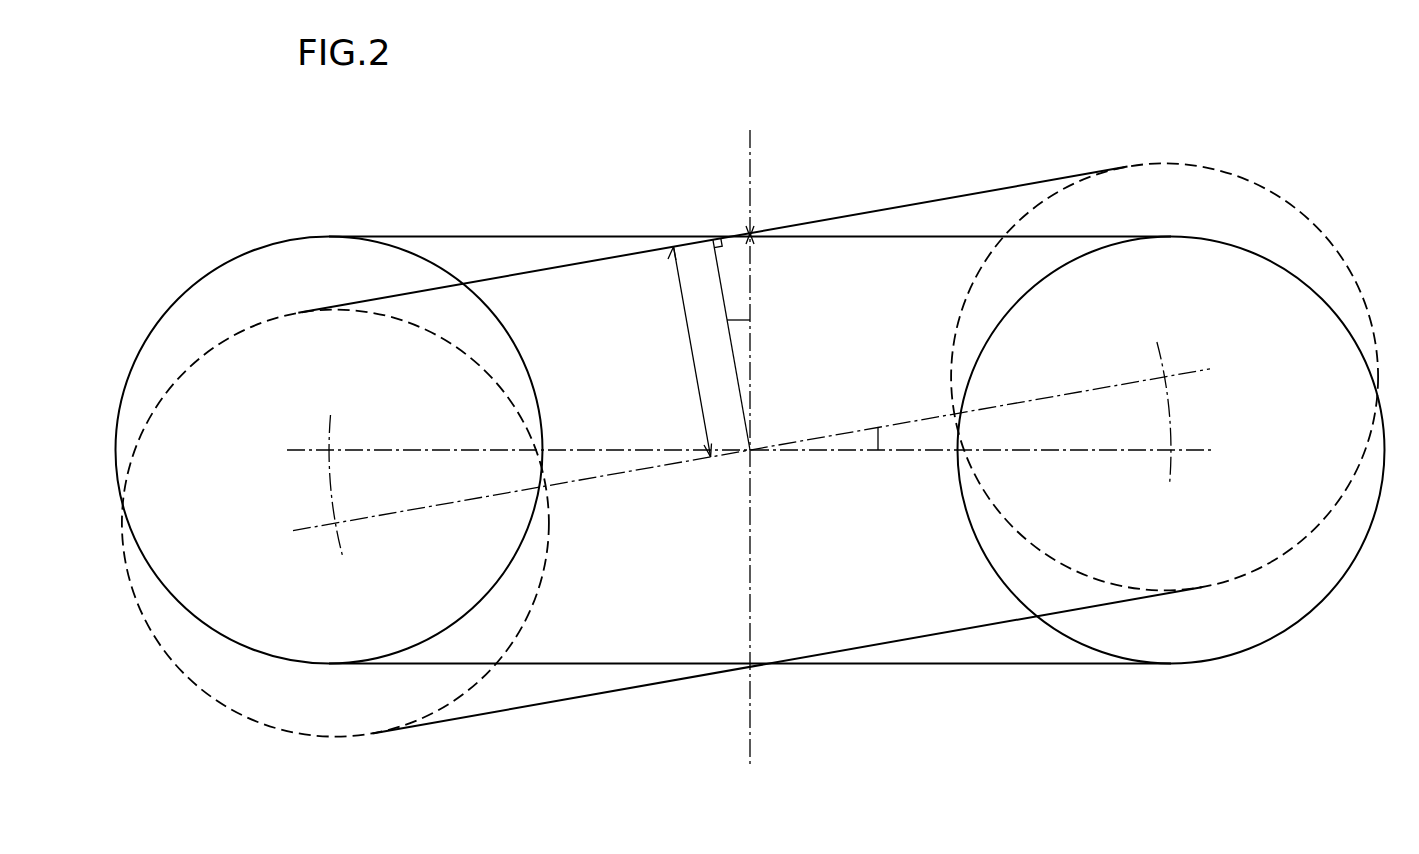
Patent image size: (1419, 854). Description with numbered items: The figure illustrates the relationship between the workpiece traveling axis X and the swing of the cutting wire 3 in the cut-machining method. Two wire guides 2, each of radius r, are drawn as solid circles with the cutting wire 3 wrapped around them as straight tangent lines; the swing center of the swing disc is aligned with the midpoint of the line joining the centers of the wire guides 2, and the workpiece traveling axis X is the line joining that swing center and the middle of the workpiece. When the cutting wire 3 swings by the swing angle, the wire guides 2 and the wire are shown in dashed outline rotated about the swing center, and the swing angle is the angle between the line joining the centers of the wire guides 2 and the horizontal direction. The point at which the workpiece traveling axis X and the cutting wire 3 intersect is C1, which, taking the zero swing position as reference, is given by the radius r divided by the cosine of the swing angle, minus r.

The wire guide 2 is at (196, 282).
The cutting wire 3 is at (546, 236).
The workpiece traveling axis X is at (749, 430).
The radius of the wire guide r is at (690, 352).
The intersection point of the workpiece moving axis and the cutting wire C1 is at (760, 234).